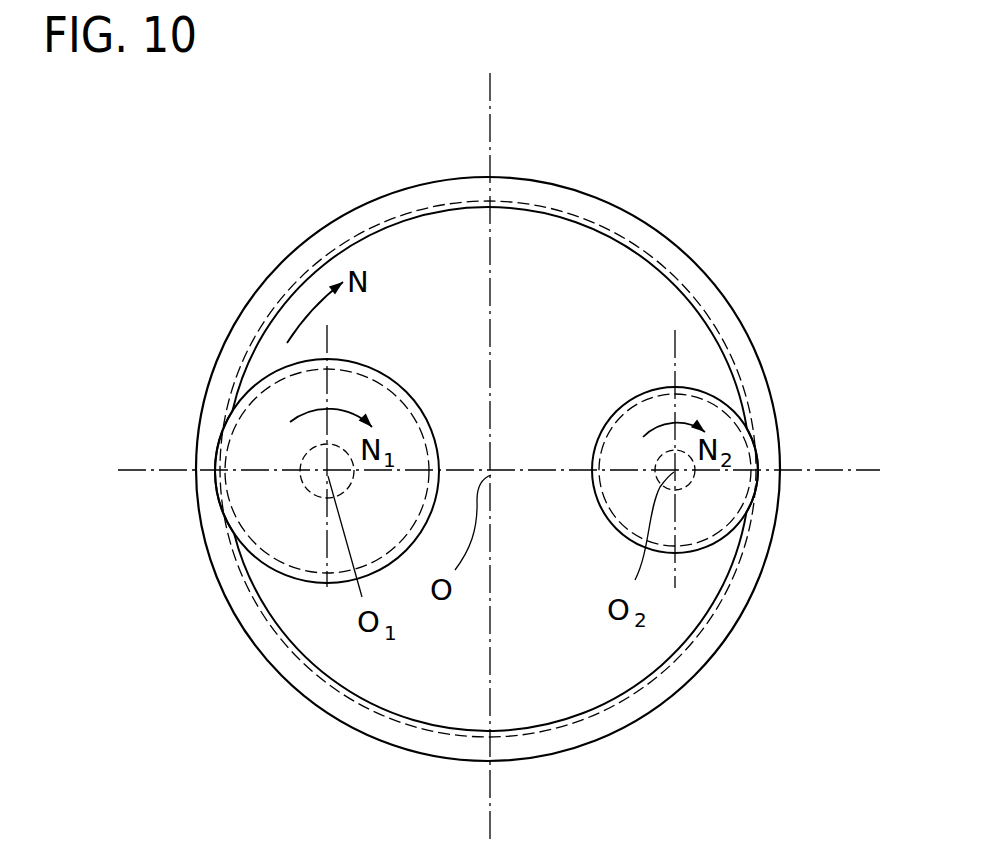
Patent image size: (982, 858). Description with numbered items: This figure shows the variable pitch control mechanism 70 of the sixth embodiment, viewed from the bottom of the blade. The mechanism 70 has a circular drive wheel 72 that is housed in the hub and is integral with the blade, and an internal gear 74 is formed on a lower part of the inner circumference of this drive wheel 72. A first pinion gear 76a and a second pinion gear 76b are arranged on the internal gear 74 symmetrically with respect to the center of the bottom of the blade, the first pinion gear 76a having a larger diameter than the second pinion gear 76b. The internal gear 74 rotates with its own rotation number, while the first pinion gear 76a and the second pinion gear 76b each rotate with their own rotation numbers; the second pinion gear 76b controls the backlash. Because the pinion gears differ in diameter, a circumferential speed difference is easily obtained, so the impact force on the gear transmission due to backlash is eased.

The variable pitch control mechanism 70 is at (623, 183).
The endless belt / tube 72 is at (687, 270).
The internal gear 74 is at (310, 656).
The first pinion gear 76a is at (282, 428).
The second pinion gear 76b is at (697, 415).